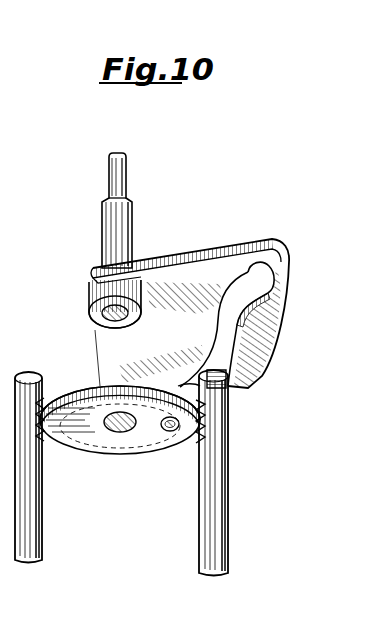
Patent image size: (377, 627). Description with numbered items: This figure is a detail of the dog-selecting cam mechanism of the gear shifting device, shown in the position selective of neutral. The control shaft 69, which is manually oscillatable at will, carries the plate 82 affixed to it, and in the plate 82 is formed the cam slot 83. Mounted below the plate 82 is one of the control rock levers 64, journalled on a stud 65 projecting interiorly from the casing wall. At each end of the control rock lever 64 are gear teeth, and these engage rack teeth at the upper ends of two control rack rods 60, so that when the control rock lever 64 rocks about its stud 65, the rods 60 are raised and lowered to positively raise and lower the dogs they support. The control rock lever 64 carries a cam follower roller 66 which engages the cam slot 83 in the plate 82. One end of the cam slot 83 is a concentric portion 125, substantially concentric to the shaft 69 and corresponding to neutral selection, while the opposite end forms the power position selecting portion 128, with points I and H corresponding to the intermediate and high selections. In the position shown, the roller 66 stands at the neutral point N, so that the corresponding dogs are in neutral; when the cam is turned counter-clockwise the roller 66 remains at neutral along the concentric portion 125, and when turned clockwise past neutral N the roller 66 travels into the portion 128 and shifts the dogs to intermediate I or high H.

The control rack rod 60 is at (44, 500).
The control rock lever 64 is at (83, 449).
The stud 65 is at (108, 426).
The cam follower roller 66 is at (178, 384).
The control shaft 69 is at (131, 226).
The plate 82 is at (205, 270).
The cam slot 83 is at (274, 284).
The concentric portion of cam slot 125 is at (160, 446).
The power position selecting portion of cam slot 128 is at (250, 352).
The high position of cam slot H is at (258, 281).
The intermediate position of cam slot I is at (238, 323).
The neutral position N is at (228, 371).